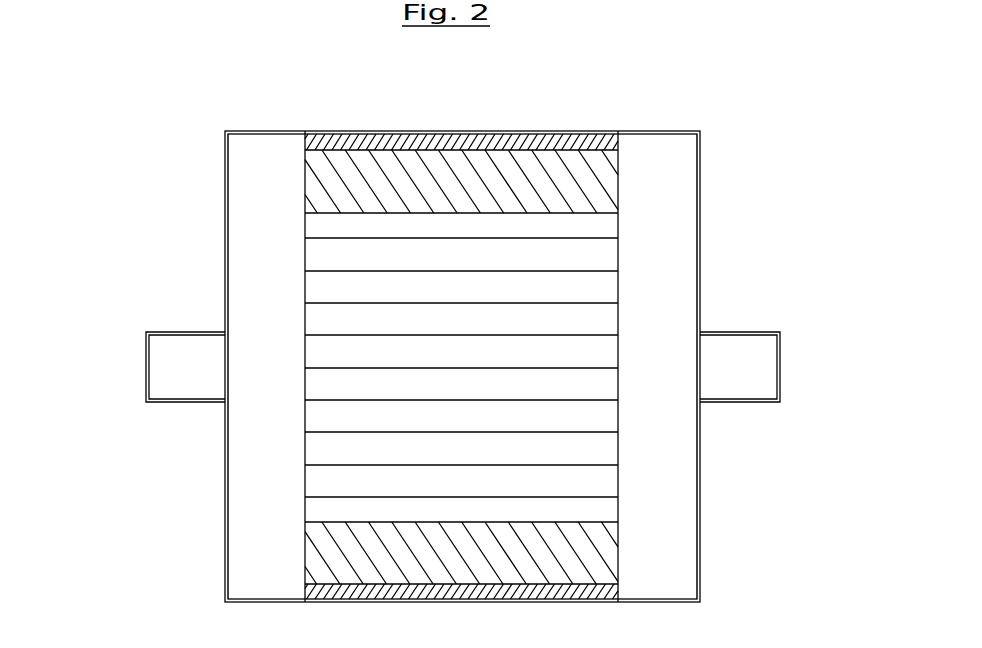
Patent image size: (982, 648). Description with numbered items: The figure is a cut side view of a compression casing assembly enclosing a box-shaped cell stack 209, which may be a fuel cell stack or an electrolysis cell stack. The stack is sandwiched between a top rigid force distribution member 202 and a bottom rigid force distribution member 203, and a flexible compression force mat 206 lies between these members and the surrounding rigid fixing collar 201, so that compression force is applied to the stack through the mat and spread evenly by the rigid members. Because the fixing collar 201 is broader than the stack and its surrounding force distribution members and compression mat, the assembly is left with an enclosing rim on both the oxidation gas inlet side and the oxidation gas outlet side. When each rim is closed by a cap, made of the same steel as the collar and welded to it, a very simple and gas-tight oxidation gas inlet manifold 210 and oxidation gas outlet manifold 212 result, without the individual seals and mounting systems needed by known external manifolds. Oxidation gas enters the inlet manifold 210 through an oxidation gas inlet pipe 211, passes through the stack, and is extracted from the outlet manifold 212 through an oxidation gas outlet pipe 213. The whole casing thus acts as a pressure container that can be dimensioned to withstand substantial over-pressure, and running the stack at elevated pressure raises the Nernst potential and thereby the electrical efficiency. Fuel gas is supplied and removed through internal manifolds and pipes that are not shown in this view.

The rigid fixing collar 201 is at (533, 366).
The top rigid force distribution member 202 is at (475, 188).
The bottom rigid force distribution member 203 is at (455, 553).
The flexible compression force mat 206 is at (497, 152).
The cell stack 209 is at (455, 353).
The oxidation gas inlet manifold 210 is at (268, 297).
The oxidation gas inlet pipe 211 is at (183, 333).
The oxidation gas outlet manifold 212 is at (653, 429).
The oxidation gas outlet pipe 213 is at (757, 400).